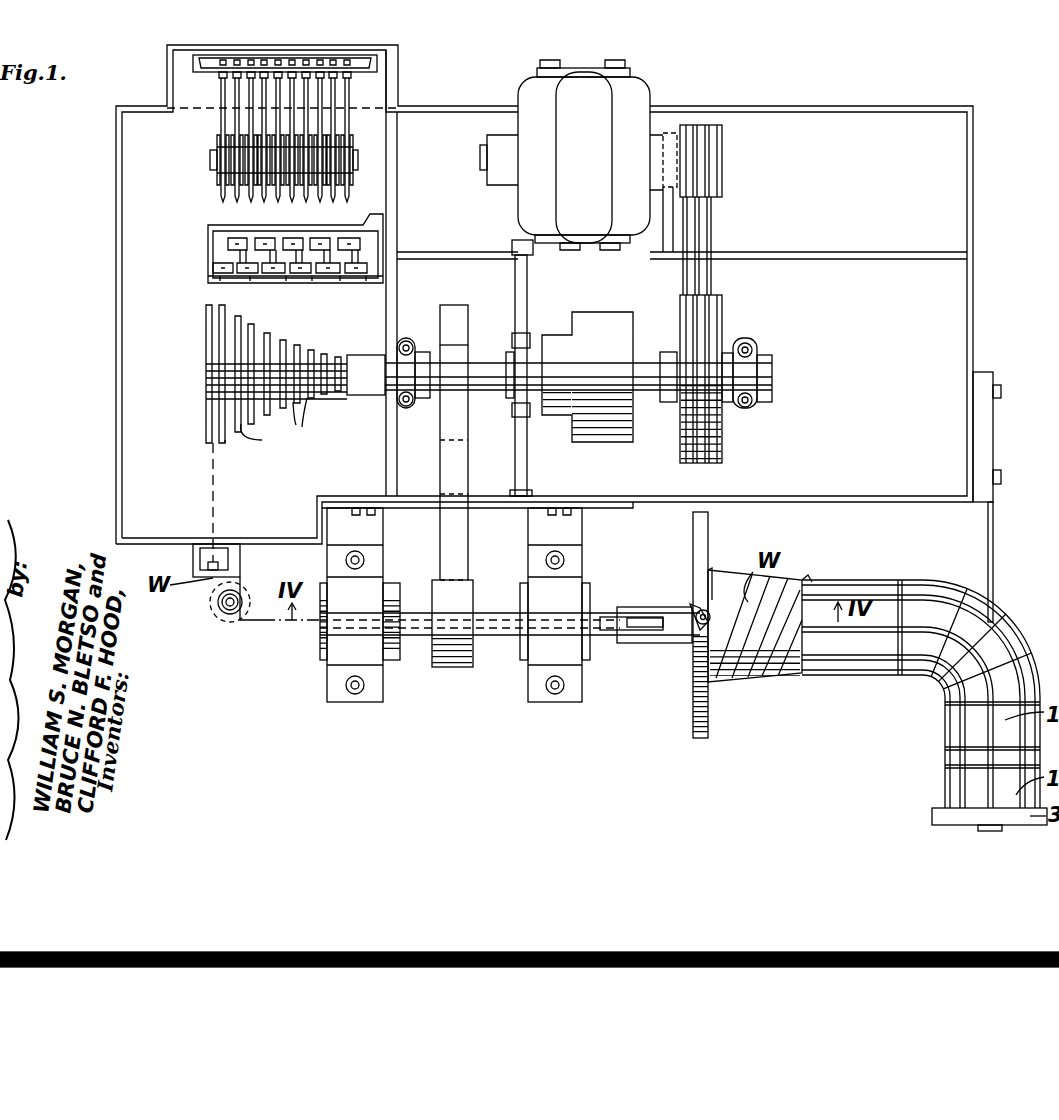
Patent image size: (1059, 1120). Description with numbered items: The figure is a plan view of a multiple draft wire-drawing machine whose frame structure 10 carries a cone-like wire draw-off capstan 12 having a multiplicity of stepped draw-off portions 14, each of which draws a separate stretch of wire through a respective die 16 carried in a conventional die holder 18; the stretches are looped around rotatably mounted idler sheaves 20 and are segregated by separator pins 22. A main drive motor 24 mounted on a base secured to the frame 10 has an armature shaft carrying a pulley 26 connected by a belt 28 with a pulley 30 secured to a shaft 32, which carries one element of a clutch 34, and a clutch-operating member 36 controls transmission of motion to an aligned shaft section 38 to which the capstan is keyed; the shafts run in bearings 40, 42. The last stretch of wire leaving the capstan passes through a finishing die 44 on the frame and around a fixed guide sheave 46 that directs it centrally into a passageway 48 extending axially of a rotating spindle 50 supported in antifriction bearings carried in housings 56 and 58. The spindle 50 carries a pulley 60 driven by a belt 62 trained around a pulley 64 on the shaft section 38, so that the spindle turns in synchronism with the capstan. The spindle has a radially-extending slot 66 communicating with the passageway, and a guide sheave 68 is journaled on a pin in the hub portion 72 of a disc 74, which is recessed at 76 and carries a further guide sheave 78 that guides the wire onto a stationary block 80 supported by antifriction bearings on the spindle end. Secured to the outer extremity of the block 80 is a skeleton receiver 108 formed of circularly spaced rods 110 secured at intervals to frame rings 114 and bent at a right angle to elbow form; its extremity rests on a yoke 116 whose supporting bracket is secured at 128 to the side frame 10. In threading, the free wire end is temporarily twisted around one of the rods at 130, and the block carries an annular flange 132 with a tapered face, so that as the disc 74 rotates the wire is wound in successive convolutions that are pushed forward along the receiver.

The frame structure 10 is at (768, 503).
The wire draw-off capstan 12 is at (206, 378).
The stepped draw-off portions 14 is at (266, 426).
The die 16 is at (247, 273).
The die holder 18 is at (208, 250).
The idler sheaves 20 is at (258, 151).
The separator pins 22 is at (300, 213).
The main drive motor 24 is at (532, 96).
The pulley 26 is at (722, 141).
The belt 28 is at (692, 233).
The pulley 30 is at (724, 303).
The shaft 32 is at (645, 392).
The clutch 34 is at (596, 322).
The clutch-operating member 36 is at (510, 412).
The shaft section 38 is at (480, 362).
The bearing 40 is at (418, 405).
The bearing 42 is at (757, 388).
The finishing die 44 is at (215, 565).
The fixed guide sheave 46 is at (222, 622).
The passageway 48 is at (345, 615).
The rotating spindle 50 is at (492, 648).
The bearing housing 56 is at (340, 652).
The bearing housing 58 is at (538, 655).
The pulley 60 is at (474, 594).
The belt 62 is at (441, 535).
The pulley 64 is at (457, 304).
The radially-extending slot 66 is at (604, 616).
The guide sheave 68 is at (640, 617).
The hub portion 72 is at (642, 643).
The disc 74 is at (694, 710).
The recess 76 is at (695, 606).
The guide sheave 78 is at (698, 626).
The stationary block 80 is at (762, 680).
The receiver 108 is at (856, 580).
The rods 110 is at (913, 673).
The frame rings 114 is at (939, 580).
The yoke 116 is at (932, 812).
The bracket securing point 128 is at (997, 458).
The temporary fastening point 130 is at (801, 584).
The annular flange 132 is at (712, 578).